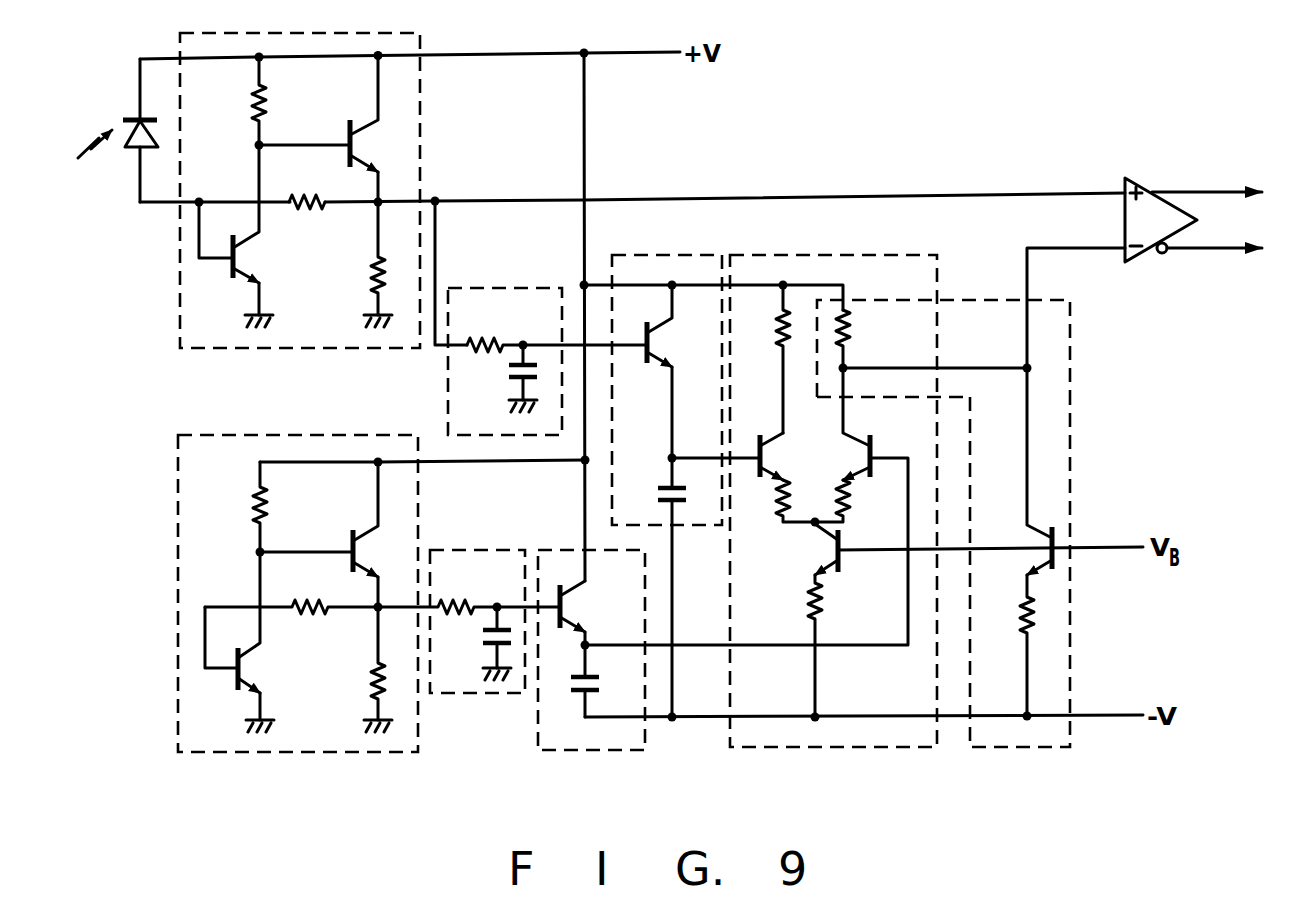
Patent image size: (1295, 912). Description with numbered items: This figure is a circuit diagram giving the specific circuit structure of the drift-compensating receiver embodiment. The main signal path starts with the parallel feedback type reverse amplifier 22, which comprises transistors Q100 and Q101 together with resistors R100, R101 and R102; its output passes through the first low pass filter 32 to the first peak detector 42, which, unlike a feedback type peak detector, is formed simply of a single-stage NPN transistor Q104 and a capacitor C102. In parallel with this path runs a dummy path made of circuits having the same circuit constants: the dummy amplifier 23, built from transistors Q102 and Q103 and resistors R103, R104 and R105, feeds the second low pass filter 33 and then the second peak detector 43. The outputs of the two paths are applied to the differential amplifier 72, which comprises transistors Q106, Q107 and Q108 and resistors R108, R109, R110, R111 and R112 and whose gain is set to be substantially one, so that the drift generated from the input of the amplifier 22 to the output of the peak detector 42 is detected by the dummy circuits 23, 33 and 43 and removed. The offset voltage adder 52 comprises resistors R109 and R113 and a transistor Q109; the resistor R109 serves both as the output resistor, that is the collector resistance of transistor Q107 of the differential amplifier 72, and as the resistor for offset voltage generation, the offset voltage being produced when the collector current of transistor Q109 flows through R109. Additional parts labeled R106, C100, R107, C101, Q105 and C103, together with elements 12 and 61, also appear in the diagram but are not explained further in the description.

The photodiode 12 is at (130, 116).
The amplifier 22 is at (211, 348).
The dummy amplifier 23 is at (355, 752).
The first low pass filter 32 is at (480, 288).
The second low pass filter 33 is at (481, 550).
The first peak detector 42 is at (662, 255).
The second peak detector 43 is at (590, 751).
The offset voltage adder 52 is at (1000, 747).
The comparator 61 is at (1157, 191).
The differential amplifier 72 is at (855, 747).
The resistor R100 is at (308, 194).
The resistor R101 is at (253, 99).
The resistor R102 is at (368, 266).
The resistor R103 is at (312, 609).
The resistor R104 is at (252, 512).
The resistor R105 is at (374, 686).
The resistor R106 is at (490, 338).
The resistor R107 is at (472, 601).
The resistor R108 is at (780, 342).
The resistor R109 is at (854, 342).
The resistor R110 is at (778, 516).
The resistor R111 is at (834, 498).
The resistor R112 is at (827, 611).
The resistor R113 is at (1017, 646).
The transistor Q100 is at (252, 273).
The transistor Q101 is at (344, 126).
The transistor Q102 is at (236, 692).
The transistor Q103 is at (361, 528).
The transistor Q104 is at (650, 345).
The transistor Q105 is at (602, 612).
The transistor Q106 is at (760, 438).
The transistor Q107 is at (864, 446).
The transistor Q108 is at (821, 563).
The transistor Q109 is at (1038, 559).
The capacitor C100 is at (510, 356).
The capacitor C101 is at (482, 646).
The capacitor C102 is at (660, 480).
The capacitor C103 is at (614, 680).